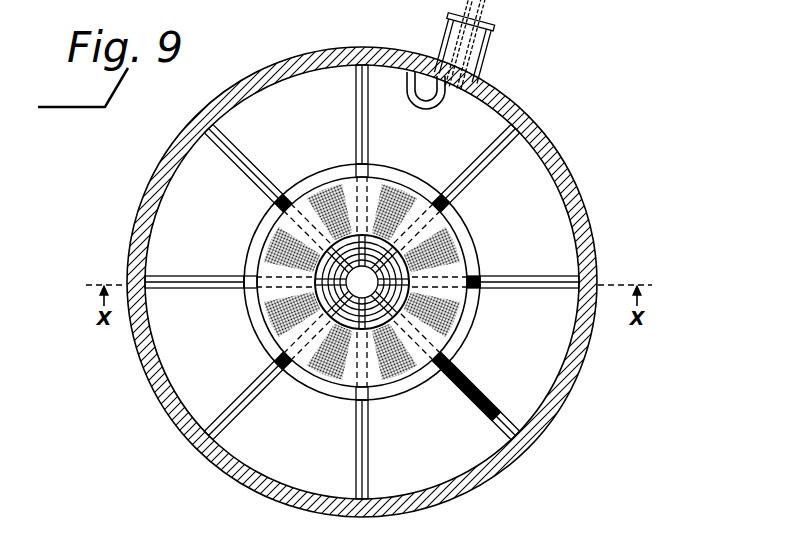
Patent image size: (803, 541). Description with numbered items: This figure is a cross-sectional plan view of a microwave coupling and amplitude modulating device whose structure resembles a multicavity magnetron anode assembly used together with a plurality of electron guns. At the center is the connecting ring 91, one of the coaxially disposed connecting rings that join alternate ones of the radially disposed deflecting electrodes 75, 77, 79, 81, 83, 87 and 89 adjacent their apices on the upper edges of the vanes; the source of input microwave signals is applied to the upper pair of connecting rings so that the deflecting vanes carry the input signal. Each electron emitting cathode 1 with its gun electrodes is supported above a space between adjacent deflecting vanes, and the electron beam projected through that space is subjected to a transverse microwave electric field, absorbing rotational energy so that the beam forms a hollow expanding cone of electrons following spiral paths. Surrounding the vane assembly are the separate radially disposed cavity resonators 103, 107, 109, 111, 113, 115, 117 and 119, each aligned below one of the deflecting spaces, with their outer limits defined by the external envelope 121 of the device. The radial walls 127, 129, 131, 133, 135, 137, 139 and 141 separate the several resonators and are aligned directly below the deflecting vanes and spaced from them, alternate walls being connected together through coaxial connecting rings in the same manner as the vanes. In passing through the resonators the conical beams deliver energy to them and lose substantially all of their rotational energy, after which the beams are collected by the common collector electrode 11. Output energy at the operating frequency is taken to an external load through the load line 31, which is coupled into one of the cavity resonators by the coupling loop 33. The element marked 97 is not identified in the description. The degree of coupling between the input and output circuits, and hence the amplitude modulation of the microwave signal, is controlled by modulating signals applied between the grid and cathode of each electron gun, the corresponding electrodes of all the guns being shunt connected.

The electron emitting cathode 1 is at (276, 206).
The common collector electrode 11 is at (462, 350).
The load line 31 is at (484, 32).
The coupling loop 33 is at (446, 96).
The deflecting electrode 75 is at (258, 270).
The deflecting electrode 77 is at (312, 181).
The deflecting electrode 79 is at (376, 173).
The deflecting electrode 81 is at (458, 214).
The deflecting electrode 83 is at (484, 292).
The deflecting electrode 87 is at (376, 396).
The deflecting electrode 89 is at (424, 377).
The connecting ring 91 is at (362, 282).
The rotor vane 97 is at (300, 302).
The chamber 103 is at (186, 228).
The cavity resonator 107 is at (288, 128).
The cavity resonator 109 is at (423, 145).
The cavity resonator 111 is at (516, 232).
The cavity resonator 113 is at (526, 348).
The cavity resonator 115 is at (416, 453).
The cavity resonator 117 is at (286, 453).
The cavity resonator 119 is at (188, 355).
The external envelope 121 is at (580, 393).
The radial wall 127 is at (205, 277).
The radial wall 129 is at (252, 166).
The radial wall 131 is at (371, 122).
The radial wall 133 is at (480, 172).
The radial wall 135 is at (530, 288).
The radial wall 137 is at (496, 418).
The radial wall 139 is at (357, 456).
The radial wall 141 is at (232, 410).